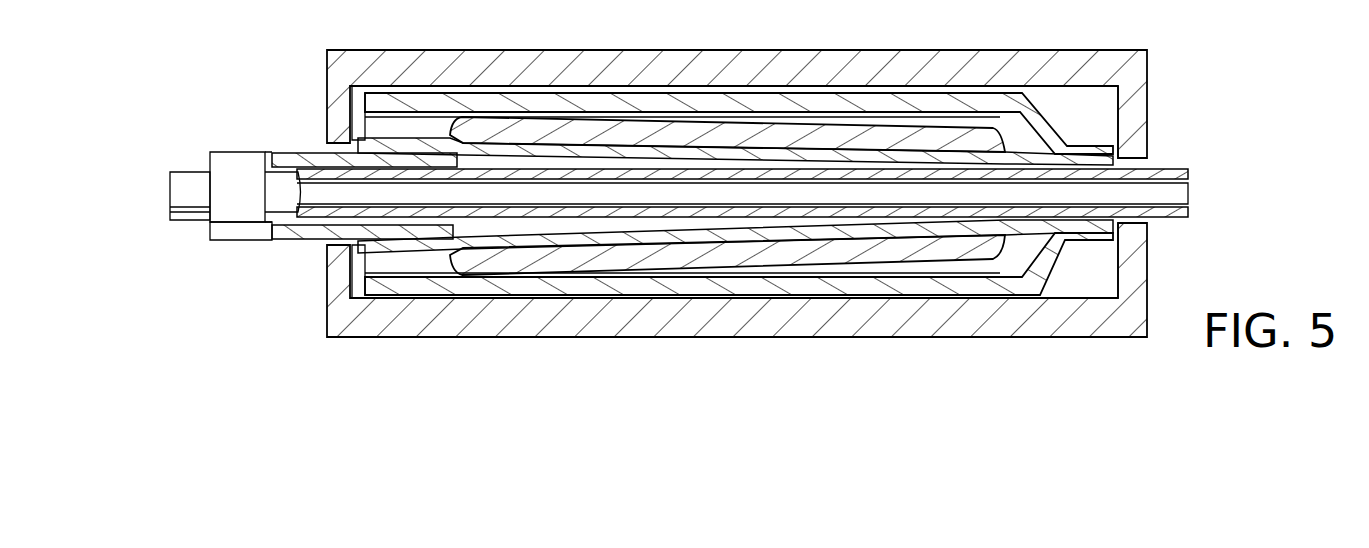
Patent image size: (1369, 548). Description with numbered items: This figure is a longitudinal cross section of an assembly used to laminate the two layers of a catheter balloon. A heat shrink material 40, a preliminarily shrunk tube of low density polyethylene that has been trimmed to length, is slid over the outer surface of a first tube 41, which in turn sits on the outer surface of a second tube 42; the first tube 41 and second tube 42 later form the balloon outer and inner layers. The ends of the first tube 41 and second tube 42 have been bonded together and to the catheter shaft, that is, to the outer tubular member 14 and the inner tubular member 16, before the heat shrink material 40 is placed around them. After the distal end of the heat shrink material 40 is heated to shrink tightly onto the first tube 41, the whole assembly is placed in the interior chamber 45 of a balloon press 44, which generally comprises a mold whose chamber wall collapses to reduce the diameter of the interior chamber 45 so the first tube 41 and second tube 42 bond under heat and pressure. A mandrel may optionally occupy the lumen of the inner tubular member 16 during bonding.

The outer tubular member 14 is at (299, 156).
The inner tubular member 16 is at (336, 214).
The heat shrink material 40 is at (915, 100).
The first tube 41 is at (778, 135).
The second tube 42 is at (690, 150).
The balloon press 44 is at (938, 313).
The interior chamber 45 is at (1075, 290).